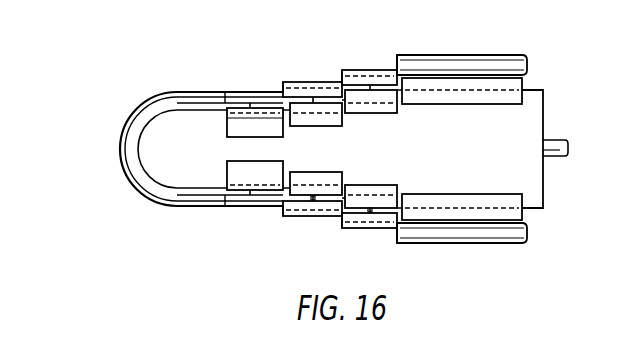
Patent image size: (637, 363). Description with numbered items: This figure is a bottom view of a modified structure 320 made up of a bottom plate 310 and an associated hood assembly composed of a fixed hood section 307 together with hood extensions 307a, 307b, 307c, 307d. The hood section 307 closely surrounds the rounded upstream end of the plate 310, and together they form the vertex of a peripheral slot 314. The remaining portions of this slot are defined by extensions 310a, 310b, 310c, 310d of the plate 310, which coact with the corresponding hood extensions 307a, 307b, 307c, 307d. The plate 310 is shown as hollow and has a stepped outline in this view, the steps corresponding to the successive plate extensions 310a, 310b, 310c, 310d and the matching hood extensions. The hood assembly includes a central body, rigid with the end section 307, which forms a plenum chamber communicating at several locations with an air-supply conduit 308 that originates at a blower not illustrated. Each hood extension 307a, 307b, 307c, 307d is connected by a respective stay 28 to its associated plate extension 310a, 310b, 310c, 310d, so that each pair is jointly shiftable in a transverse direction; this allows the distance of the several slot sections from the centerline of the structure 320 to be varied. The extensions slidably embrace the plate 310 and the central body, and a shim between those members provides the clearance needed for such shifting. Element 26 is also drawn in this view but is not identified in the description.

The sensor unit 26 is at (227, 125).
The stays 28 is at (370, 210).
The hood section 307 is at (137, 110).
The hood extension 307a is at (245, 92).
The hood extension 307b is at (312, 80).
The hood extension 307c is at (370, 67).
The hood extension 307d is at (465, 55).
The air-supply conduit 308 is at (563, 153).
The bottom plate 310 is at (147, 152).
The plate extension 310a is at (233, 137).
The plate extension 310b is at (322, 126).
The plate extension 310c is at (388, 113).
The plate extension 310d is at (485, 104).
The peripheral slot 314 is at (147, 182).
The modified structure 320 is at (175, 85).